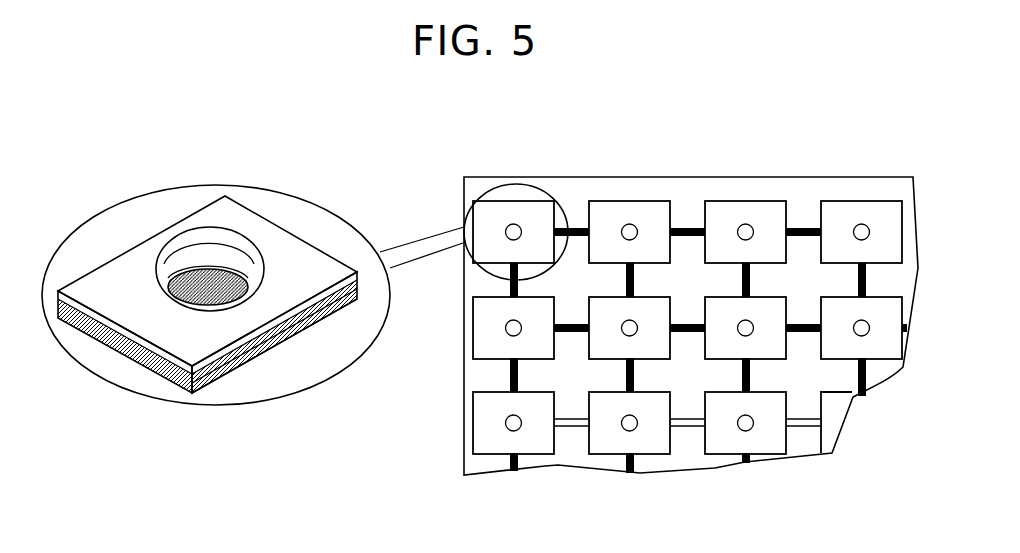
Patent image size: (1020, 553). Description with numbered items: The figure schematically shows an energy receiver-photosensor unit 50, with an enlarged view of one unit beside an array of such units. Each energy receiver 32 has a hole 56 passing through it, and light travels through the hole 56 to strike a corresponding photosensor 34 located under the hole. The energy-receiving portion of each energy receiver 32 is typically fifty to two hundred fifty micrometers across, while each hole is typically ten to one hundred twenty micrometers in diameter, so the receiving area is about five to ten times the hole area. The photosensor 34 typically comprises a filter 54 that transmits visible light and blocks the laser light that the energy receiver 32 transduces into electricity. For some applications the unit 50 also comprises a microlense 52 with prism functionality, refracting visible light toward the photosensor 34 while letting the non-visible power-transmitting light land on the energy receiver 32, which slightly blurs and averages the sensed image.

The energy receiver 32 is at (243, 338).
The photosensor 34 is at (221, 373).
The energy receiver-photosensor unit 50 is at (311, 236).
The microlense 52 is at (223, 231).
The filter 54 is at (187, 283).
The hole 56 is at (158, 270).